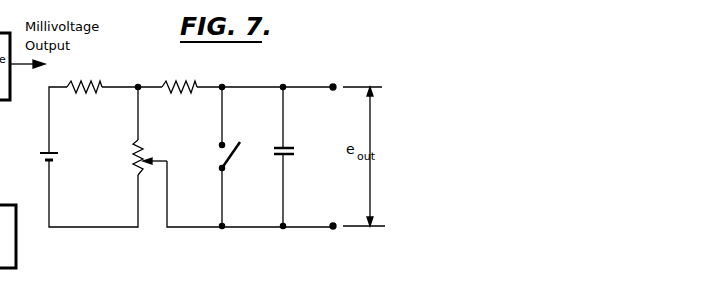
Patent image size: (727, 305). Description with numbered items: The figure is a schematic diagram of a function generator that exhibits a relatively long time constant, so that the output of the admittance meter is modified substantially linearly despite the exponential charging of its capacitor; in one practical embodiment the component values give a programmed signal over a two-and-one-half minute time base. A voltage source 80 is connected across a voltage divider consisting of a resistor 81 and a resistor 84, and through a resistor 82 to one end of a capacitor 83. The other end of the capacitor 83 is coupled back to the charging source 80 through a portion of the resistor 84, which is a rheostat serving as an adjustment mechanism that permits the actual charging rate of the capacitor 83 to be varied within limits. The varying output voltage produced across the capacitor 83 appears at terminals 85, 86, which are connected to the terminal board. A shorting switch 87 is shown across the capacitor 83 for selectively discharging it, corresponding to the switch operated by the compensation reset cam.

The voltage source 80 is at (60, 157).
The resistor 81 is at (99, 96).
The resistor 82 is at (196, 92).
The capacitor 83 is at (297, 153).
The rheostat 84 is at (171, 152).
The terminal 85 is at (338, 92).
The terminal 86 is at (331, 230).
The shorting switch 87 is at (217, 158).